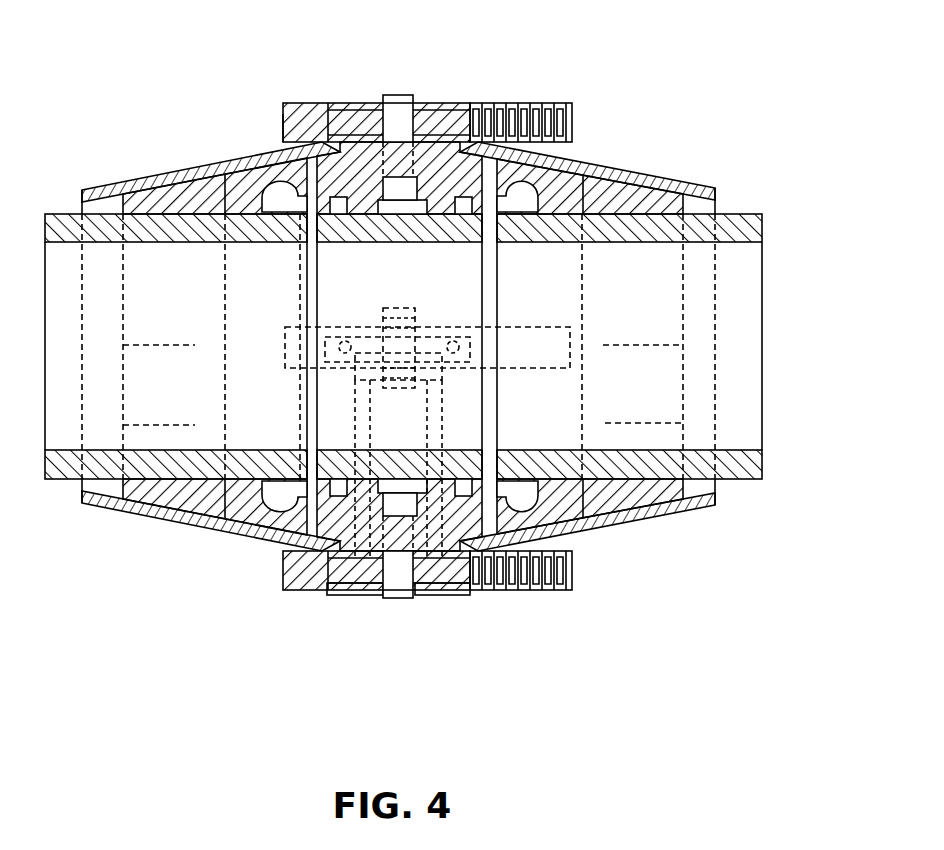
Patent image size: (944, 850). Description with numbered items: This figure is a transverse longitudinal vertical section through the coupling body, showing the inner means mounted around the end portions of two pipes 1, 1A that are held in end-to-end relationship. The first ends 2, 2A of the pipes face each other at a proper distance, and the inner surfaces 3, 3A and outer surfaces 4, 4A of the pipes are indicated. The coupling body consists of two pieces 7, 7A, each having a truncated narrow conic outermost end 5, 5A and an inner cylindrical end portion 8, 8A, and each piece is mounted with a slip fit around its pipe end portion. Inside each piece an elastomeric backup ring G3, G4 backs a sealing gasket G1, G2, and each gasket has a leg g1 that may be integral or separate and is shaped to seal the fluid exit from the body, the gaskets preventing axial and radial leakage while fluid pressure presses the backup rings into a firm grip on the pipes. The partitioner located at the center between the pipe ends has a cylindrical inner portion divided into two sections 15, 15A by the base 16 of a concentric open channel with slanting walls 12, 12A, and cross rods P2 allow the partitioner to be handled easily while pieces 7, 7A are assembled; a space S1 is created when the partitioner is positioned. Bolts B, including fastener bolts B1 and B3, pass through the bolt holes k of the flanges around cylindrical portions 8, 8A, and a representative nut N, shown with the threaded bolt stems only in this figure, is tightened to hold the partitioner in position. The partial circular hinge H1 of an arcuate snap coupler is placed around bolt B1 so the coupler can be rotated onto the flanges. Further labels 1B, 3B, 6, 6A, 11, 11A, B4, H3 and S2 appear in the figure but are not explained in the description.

The pipe 1 is at (96, 218).
The pipe 1A is at (740, 222).
The clamp nut 1B is at (283, 114).
The first end of pipe 2 is at (312, 245).
The first end of pipe 2A is at (545, 435).
The inner surface of pipe 3 is at (72, 452).
The inner surface of pipe 3A is at (605, 450).
The lower clamp nut 3B is at (330, 553).
The outer surface of pipe 4 is at (122, 452).
The outer surface of pipe 4A is at (662, 475).
The truncated conic outermost end 5 is at (82, 190).
The truncated conic outermost end 5A is at (715, 188).
The lower flange plate 6 is at (192, 512).
The lower flange plate 6A is at (625, 512).
The coupling body piece 7 is at (225, 162).
The coupling body piece 7A is at (623, 170).
The inner cylindrical end portion 8 is at (323, 108).
The inner cylindrical end portion 8A is at (462, 108).
The sleeve 11 is at (305, 462).
The sleeve 11A is at (482, 460).
The slanting wall 12 is at (340, 520).
The slanting wall 12A is at (462, 545).
The cylindrical base section 15 is at (335, 227).
The cylindrical base section 15A is at (492, 243).
The base of concentric open channel 16 is at (430, 222).
The bolt B is at (580, 110).
The fastener bolt B1 is at (397, 105).
The fastener bolt B3 is at (403, 593).
The center bolt B4 is at (285, 347).
The sealing gasket G1 is at (248, 194).
The sealing gasket G2 is at (583, 207).
The elastomeric backup ring G3 is at (187, 197).
The elastomeric backup ring G4 is at (648, 505).
The gasket leg g1 is at (296, 206).
The partial circular hinge H1 is at (402, 195).
The hole H3 is at (402, 497).
The bolt hole k is at (367, 100).
The nut N is at (527, 102).
The cross rod P2 is at (367, 168).
The space S1 is at (158, 347).
The seal S2 is at (647, 343).